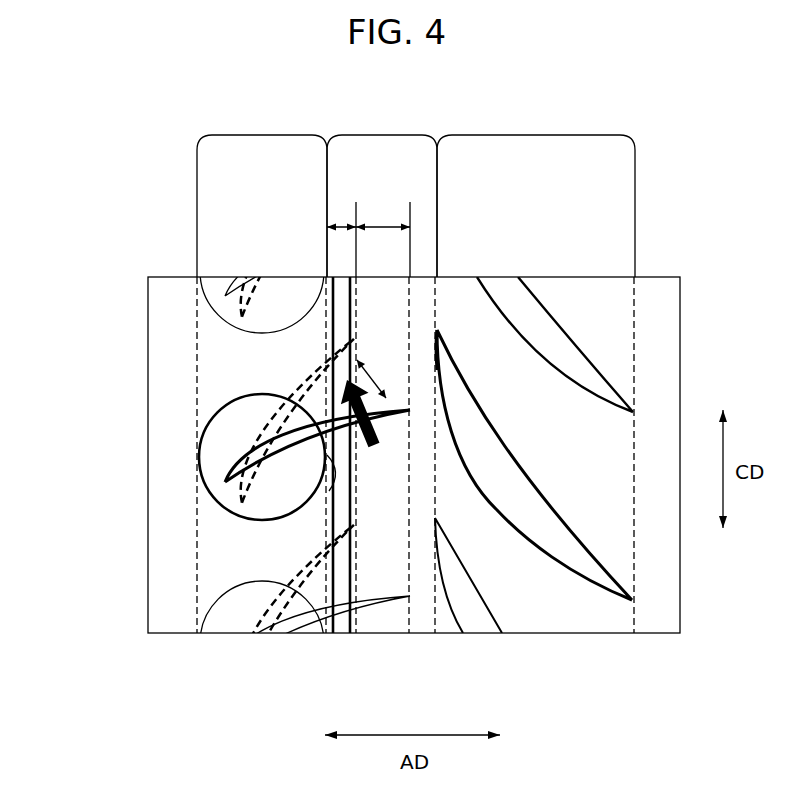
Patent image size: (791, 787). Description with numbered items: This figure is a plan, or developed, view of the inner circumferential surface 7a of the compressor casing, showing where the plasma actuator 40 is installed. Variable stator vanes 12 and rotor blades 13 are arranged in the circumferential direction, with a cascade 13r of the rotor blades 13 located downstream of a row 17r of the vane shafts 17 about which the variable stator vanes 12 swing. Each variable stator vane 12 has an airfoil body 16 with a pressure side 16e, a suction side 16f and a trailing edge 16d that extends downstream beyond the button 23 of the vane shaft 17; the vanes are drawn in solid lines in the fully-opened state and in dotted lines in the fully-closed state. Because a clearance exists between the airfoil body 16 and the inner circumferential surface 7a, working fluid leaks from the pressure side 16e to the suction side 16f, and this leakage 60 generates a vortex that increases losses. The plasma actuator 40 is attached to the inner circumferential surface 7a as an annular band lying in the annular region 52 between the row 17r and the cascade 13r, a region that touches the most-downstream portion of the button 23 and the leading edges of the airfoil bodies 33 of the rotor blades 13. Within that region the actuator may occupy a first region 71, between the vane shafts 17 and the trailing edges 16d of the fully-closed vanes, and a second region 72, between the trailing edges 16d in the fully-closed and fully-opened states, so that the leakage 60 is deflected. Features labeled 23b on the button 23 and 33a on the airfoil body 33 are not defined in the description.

The inner circumferential surface 7a is at (670, 352).
The variable stator vane 12 is at (221, 421).
The rotor blade 13 is at (545, 308).
The cascade of the rotor blades 13r is at (536, 189).
The airfoil body 16 is at (240, 466).
The trailing edge 16d is at (352, 345).
The pressure side 16e is at (310, 462).
The suction side 16f is at (310, 462).
The vane shaft 17 is at (178, 457).
The row of the vane shafts 17r is at (262, 189).
The button 23 is at (211, 304).
The hub recess 23b is at (330, 468).
The airfoil body 33 is at (534, 433).
The stator vane leading edge 33a is at (437, 330).
The plasma actuator 40 is at (344, 633).
The annular region 52 is at (382, 189).
The leakage 60 is at (374, 447).
The first region 71 is at (342, 222).
The second region 72 is at (382, 222).